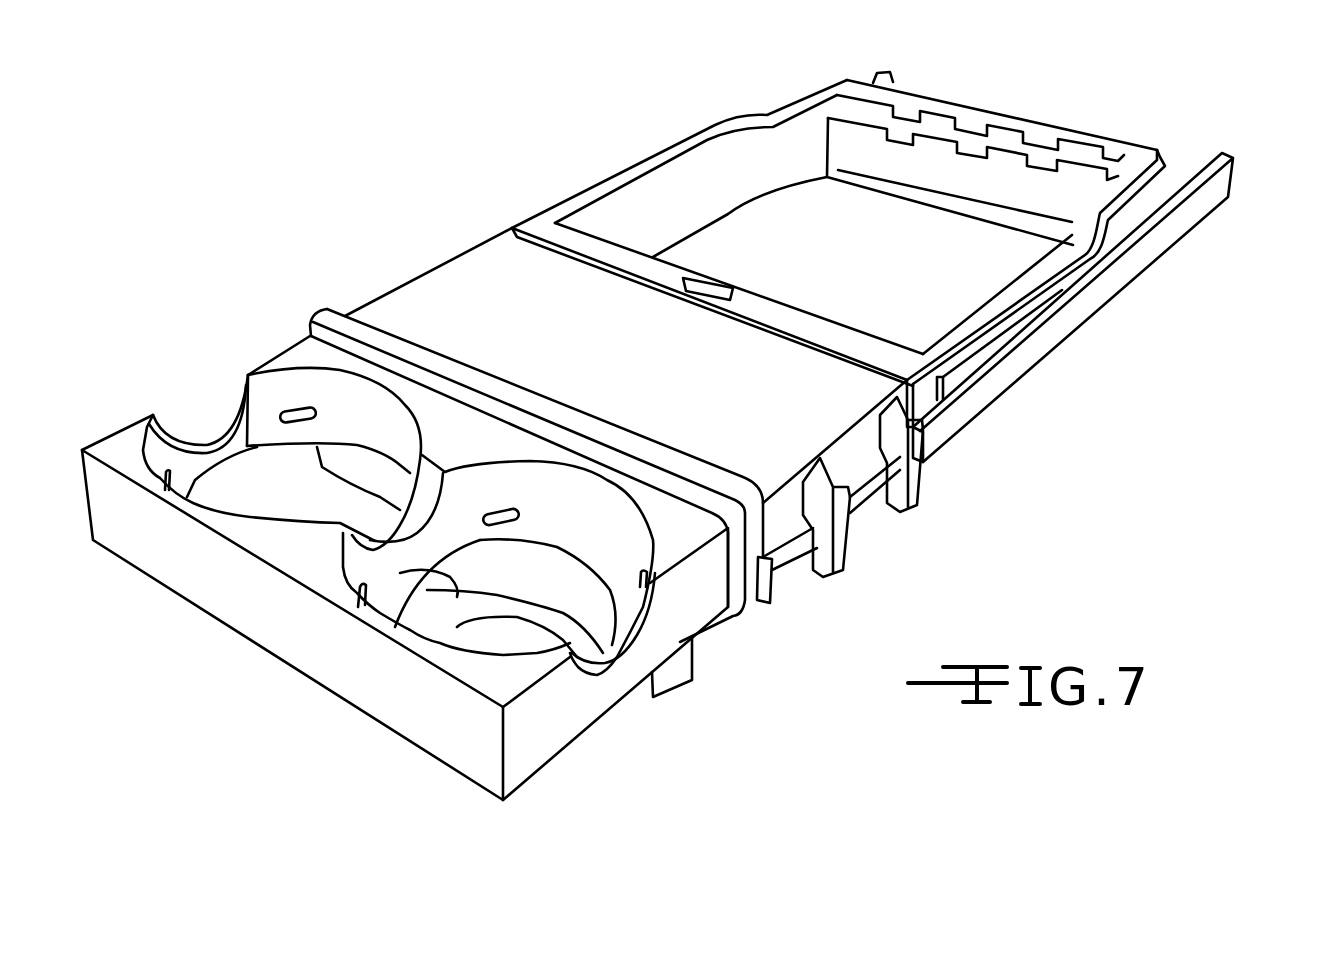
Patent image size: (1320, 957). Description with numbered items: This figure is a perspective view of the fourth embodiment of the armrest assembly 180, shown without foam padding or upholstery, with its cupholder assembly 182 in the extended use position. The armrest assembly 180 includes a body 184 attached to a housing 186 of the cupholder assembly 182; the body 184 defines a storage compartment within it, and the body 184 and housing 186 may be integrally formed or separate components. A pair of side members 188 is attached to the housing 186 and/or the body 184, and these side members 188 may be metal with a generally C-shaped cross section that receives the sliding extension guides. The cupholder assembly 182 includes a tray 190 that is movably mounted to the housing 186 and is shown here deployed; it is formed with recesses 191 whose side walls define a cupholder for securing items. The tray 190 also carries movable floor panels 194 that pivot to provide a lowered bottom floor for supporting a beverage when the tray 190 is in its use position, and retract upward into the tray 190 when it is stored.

The armrest assembly 180 is at (545, 80).
The cupholder assembly 182 is at (432, 764).
The body 184 is at (963, 330).
The housing 186 is at (422, 300).
The side members 188 is at (872, 74).
The tray 190 is at (557, 715).
The recesses 191 is at (293, 387).
The floor panels 194 is at (267, 510).